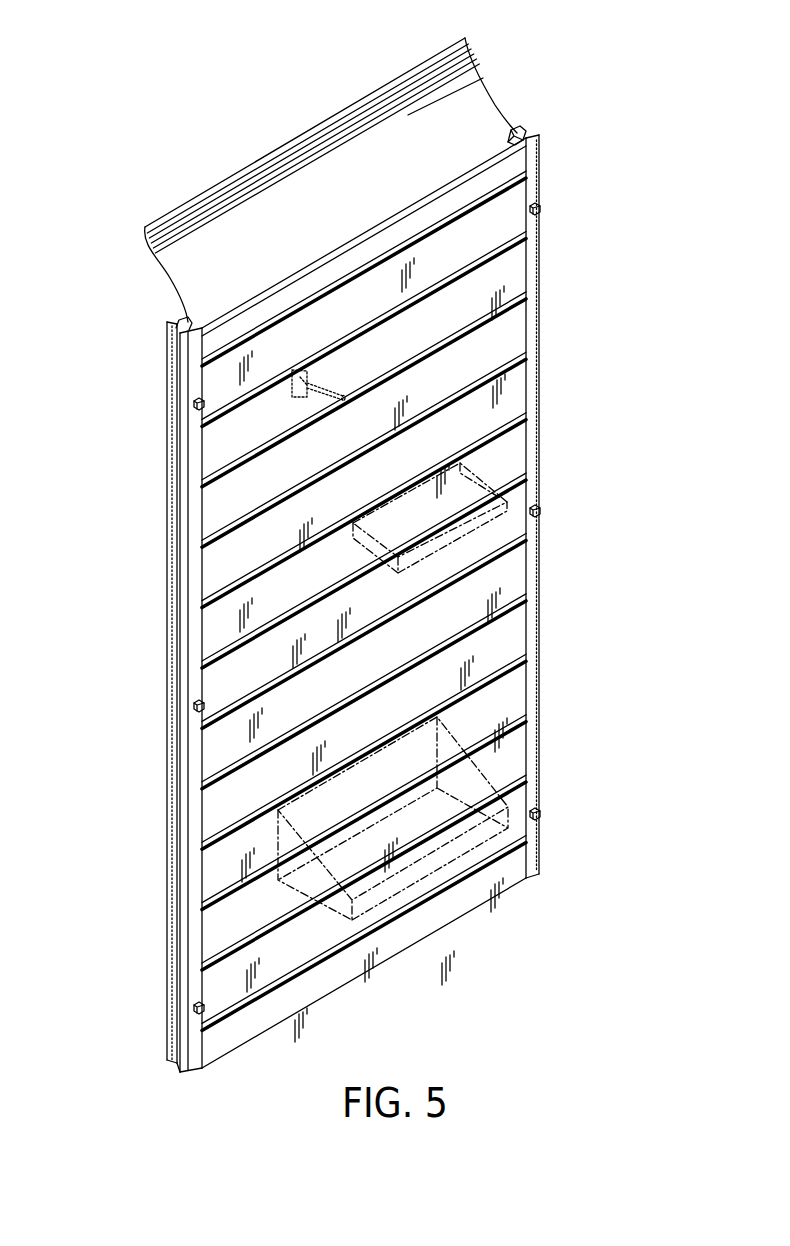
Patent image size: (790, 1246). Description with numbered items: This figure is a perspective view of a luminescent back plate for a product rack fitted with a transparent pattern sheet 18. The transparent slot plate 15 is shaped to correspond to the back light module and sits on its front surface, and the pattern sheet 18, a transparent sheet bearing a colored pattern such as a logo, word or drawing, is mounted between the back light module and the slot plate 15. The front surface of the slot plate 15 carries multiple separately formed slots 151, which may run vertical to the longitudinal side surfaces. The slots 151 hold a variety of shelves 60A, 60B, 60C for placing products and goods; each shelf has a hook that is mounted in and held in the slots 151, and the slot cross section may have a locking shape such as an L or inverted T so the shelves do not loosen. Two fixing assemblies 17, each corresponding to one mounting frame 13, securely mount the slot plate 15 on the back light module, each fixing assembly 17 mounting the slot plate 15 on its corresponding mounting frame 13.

The mounting frame 13 is at (523, 120).
The slot plate 15 is at (537, 134).
The fixing assembly 17 is at (542, 169).
The pattern sheet 18 is at (435, 63).
The slot 151 is at (513, 366).
The shelf 60A is at (482, 498).
The shelf 60B is at (433, 862).
The shelf 60C is at (318, 397).